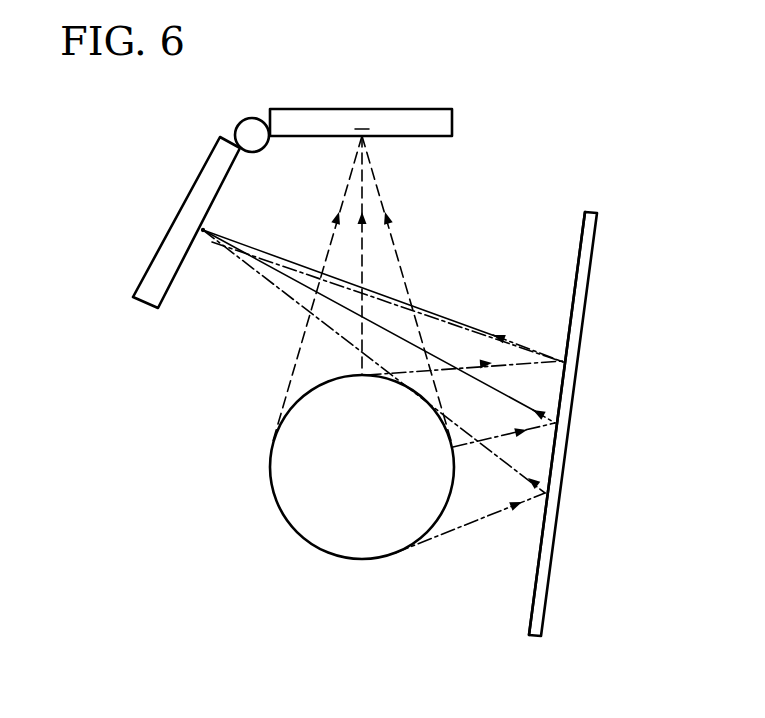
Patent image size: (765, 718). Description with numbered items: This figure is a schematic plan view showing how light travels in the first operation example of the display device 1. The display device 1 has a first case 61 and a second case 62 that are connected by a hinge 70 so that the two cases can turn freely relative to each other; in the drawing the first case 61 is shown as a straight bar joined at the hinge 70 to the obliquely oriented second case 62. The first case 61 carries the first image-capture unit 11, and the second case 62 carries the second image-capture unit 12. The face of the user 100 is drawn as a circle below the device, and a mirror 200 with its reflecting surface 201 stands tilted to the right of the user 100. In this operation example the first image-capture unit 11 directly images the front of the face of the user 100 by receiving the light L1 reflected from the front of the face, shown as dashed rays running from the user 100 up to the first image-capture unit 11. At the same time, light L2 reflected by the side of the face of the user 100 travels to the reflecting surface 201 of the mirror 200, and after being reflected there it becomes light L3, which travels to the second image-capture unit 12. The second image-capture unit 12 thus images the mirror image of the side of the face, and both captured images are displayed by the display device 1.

The display device 1 is at (122, 302).
The first image-capture unit 11 is at (362, 128).
The second image-capture unit 12 is at (200, 228).
The first case 61 is at (452, 122).
The second case 62 is at (162, 248).
The hinge 70 is at (253, 133).
The user 100 is at (270, 520).
The mirror 200 is at (566, 572).
The reflecting surface 201 is at (573, 298).
The light L1 is at (392, 170).
The light L2 is at (465, 355).
The light L3 is at (248, 283).